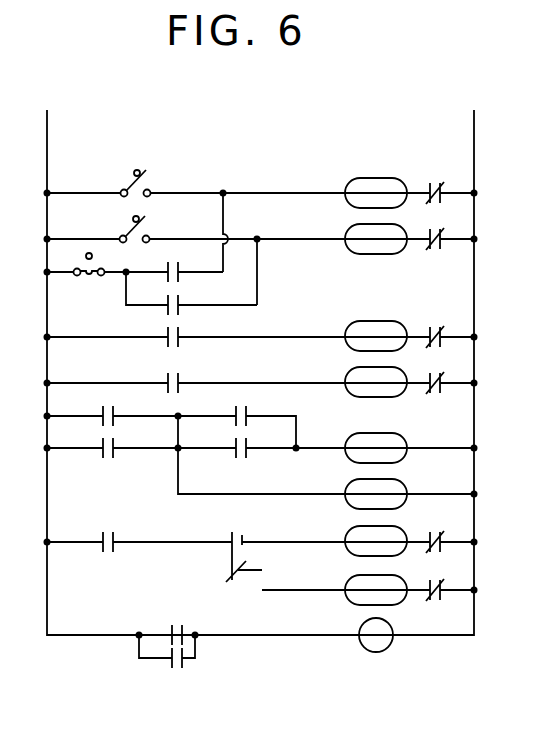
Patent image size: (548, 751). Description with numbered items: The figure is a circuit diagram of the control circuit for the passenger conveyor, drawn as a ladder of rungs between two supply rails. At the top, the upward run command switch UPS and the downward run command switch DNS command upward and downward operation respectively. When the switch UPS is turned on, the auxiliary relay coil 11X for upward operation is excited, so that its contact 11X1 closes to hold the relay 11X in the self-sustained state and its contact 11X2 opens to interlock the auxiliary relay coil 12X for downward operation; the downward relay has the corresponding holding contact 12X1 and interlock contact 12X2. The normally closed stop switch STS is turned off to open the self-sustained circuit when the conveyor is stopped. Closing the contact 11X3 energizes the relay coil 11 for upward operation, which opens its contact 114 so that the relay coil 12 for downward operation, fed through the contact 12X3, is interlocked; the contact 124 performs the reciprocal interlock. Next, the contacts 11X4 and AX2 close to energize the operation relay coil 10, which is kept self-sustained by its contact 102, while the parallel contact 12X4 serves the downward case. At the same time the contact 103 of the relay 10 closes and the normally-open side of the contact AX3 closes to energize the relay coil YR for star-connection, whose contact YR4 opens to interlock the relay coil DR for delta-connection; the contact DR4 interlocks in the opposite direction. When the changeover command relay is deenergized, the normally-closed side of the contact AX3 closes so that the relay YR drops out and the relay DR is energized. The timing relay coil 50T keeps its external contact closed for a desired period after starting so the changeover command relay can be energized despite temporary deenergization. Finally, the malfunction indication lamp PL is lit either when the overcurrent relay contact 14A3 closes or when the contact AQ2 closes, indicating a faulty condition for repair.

The upward run command switch UPS is at (131, 181).
The downward run command switch DNS is at (126, 229).
The stop switch STS is at (92, 276).
The auxiliary relay coil for upward operation 11X is at (374, 178).
The auxiliary relay coil for downward operation 12X is at (344, 236).
The contact of auxiliary relay 11X 11X1 is at (168, 266).
The contact of auxiliary relay 12X 12X1 is at (177, 302).
The contact of auxiliary relay 11X 11X2 is at (436, 252).
The contact of auxiliary relay 12X 12X2 is at (435, 180).
The contact of auxiliary relay 11X 11X3 is at (168, 330).
The contact of auxiliary relay 12X 12X3 is at (168, 377).
The contact of auxiliary relay 11X 11X4 is at (104, 410).
The contact of auxiliary relay 12X 12X4 is at (108, 456).
The relay coil for upward operation 11 is at (360, 324).
The relay coil for downward operation 12 is at (350, 370).
The contact of relay 11 114 is at (435, 373).
The contact of relay 12 124 is at (435, 326).
The operation relay coil 10 is at (355, 436).
The contact of relay 10 102 is at (237, 410).
The contact of relay 10 103 is at (106, 530).
The timing relay coil 50T is at (356, 482).
The contact of relay AX AX2 is at (242, 458).
The contact of relay AX AX3 is at (232, 532).
The relay coil for star-connection YR is at (352, 530).
The relay coil for delta-connection DR is at (348, 578).
The contact of relay DR DR4 is at (435, 534).
The contact of relay YR YR4 is at (437, 598).
The contact of relay AQ AQ2 is at (176, 626).
The contact of overcurrent relay 14A3 is at (176, 668).
The malfunction indication lamp PL is at (360, 626).